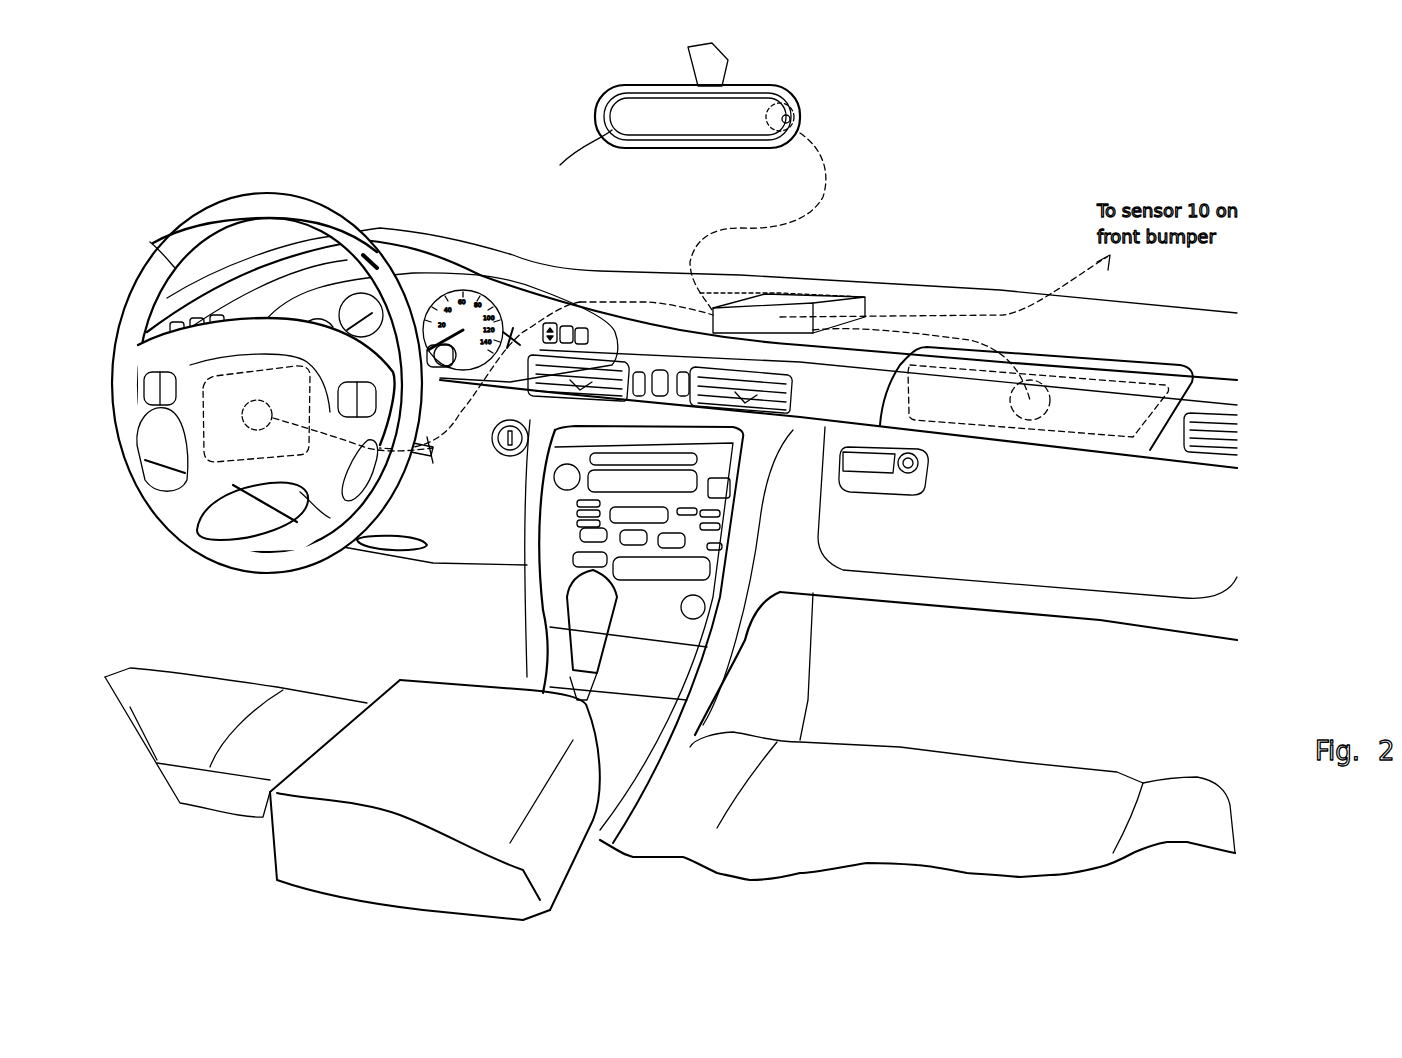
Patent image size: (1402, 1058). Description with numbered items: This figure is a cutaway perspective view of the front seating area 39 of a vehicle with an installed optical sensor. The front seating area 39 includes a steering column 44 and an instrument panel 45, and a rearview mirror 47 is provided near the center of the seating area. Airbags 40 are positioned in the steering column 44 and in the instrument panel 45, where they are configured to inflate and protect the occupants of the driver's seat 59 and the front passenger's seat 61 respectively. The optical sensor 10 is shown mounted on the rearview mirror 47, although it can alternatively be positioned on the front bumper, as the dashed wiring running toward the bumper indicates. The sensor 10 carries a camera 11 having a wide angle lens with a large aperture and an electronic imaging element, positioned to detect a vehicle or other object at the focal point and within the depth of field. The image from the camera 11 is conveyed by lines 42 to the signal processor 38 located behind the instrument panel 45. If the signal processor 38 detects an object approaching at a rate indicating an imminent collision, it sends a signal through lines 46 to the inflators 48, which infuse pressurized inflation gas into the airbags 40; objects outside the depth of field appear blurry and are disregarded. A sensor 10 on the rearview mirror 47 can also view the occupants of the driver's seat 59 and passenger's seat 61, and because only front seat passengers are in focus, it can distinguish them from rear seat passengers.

The optical sensor 10 is at (812, 100).
The camera 11 is at (800, 118).
The signal processor 38 is at (813, 298).
The front seating area 39 is at (1265, 232).
The airbags 40 is at (1133, 437).
The lines 42 is at (830, 178).
The steering column 44 is at (193, 367).
The instrument panel 45 is at (883, 440).
The lines 46 is at (980, 337).
The rearview mirror 47 is at (600, 130).
The inflators 48 is at (1030, 420).
The driver's seat 59 is at (263, 687).
The front passenger's seat 61 is at (1040, 778).